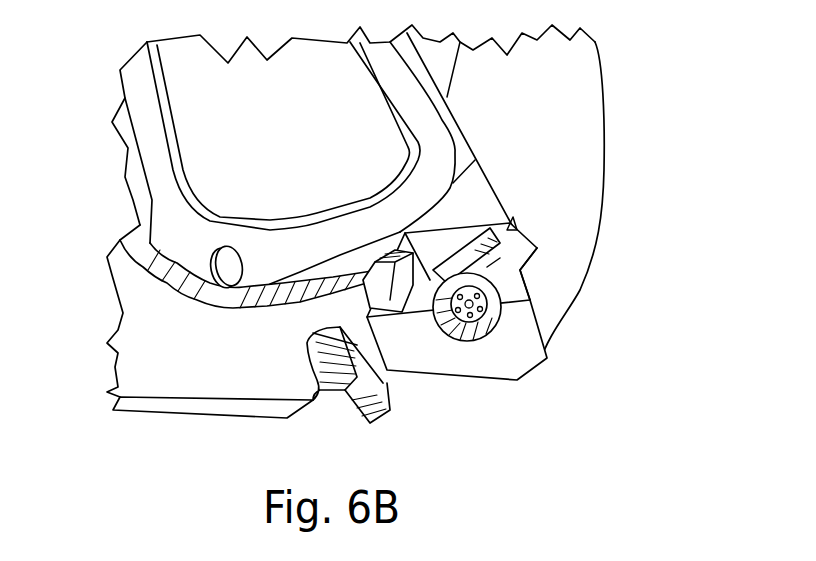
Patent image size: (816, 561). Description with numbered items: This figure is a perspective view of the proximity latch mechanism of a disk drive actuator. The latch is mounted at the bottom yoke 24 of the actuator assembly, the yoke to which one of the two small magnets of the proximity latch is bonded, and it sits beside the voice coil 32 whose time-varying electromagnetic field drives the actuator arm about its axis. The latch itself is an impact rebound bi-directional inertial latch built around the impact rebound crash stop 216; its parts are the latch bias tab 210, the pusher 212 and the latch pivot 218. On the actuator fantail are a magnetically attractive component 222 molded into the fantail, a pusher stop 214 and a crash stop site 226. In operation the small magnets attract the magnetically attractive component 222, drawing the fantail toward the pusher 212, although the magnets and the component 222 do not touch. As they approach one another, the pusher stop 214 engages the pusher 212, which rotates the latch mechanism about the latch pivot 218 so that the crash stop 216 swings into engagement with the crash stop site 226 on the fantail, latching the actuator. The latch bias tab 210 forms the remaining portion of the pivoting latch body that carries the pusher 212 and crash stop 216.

The bottom yoke 24 is at (595, 155).
The voice coil 32 is at (330, 260).
The latch bias tab 210 is at (430, 387).
The pusher 212 is at (430, 280).
The pusher stop 214 is at (423, 263).
The impact rebound crash stop 216 is at (520, 228).
The latch pivot 218 is at (500, 302).
The magnetically attractive component 222 is at (487, 268).
The crash stop site 226 is at (500, 224).